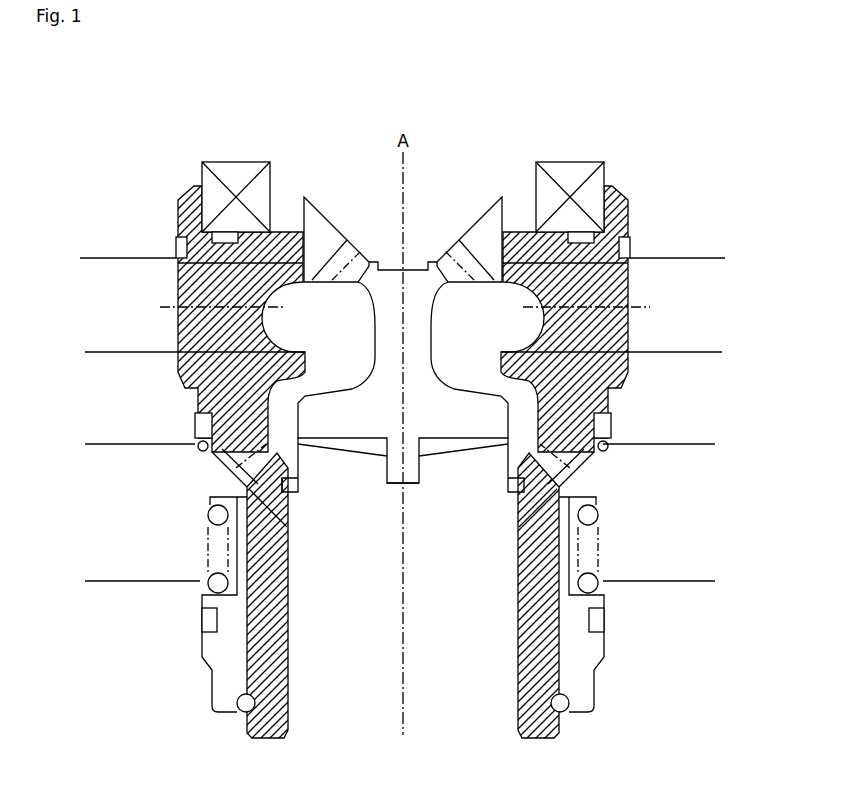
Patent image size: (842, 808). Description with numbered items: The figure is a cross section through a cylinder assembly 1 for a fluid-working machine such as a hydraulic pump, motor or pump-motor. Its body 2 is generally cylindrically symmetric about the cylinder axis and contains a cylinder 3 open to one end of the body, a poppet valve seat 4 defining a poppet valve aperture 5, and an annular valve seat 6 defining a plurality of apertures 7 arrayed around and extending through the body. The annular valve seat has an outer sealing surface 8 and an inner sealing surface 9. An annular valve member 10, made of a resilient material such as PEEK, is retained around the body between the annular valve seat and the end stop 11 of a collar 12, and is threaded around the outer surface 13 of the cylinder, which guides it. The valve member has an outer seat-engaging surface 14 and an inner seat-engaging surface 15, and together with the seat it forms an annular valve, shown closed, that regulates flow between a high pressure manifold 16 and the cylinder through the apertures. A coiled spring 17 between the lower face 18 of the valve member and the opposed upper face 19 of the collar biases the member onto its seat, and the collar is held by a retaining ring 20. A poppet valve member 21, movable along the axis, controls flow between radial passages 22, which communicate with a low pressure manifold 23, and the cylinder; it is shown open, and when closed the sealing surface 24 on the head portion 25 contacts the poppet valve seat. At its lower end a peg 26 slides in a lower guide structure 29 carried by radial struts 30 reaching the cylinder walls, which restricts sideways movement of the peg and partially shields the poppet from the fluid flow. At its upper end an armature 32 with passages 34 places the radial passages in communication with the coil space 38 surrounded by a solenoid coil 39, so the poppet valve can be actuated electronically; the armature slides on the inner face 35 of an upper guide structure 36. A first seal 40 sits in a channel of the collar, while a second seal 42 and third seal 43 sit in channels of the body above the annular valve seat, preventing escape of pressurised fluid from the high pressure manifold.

The cylinder assembly 1 is at (207, 101).
The body 2 is at (178, 215).
The cylinder 3 is at (445, 678).
The poppet valve seat 4 is at (293, 392).
The poppet valve aperture 5 is at (480, 357).
The annular valve seat 6 is at (605, 452).
The apertures 7 is at (283, 480).
The outer sealing surface 8 is at (195, 443).
The inner sealing surface 9 is at (287, 530).
The annular valve member 10 is at (587, 478).
The end stop 11 is at (577, 537).
The collar 12 is at (222, 667).
The outer surface 13 is at (240, 503).
The outer seat-engaging surface 14 is at (208, 456).
The inner seat-engaging surface 15 is at (227, 493).
The high pressure manifold 16 is at (87, 522).
The coiled spring 17 is at (200, 582).
The lower face 18 is at (590, 497).
The upper face 19 is at (606, 600).
The retaining ring 20 is at (237, 713).
The poppet valve member 21 is at (373, 333).
The radial passages 22 is at (172, 307).
The low pressure manifold 23 is at (70, 337).
The sealing surface 24 is at (305, 392).
The head portion 25 is at (413, 417).
The peg 26 is at (386, 462).
The lower guide structure 29 is at (423, 457).
The radial struts 30 is at (327, 452).
The armature 32 is at (313, 218).
The passages 34 is at (345, 253).
The inner face 35 is at (497, 240).
The upper guide structure 36 is at (293, 243).
The coil space 38 is at (515, 208).
The solenoid coil 39 is at (212, 162).
The first seal 40 is at (207, 618).
The second seal 42 is at (618, 420).
The third seal 43 is at (630, 250).